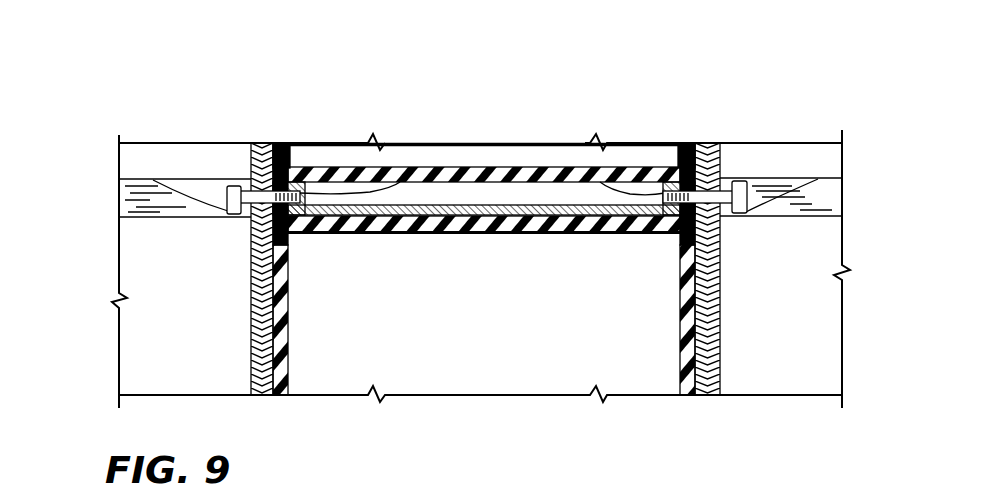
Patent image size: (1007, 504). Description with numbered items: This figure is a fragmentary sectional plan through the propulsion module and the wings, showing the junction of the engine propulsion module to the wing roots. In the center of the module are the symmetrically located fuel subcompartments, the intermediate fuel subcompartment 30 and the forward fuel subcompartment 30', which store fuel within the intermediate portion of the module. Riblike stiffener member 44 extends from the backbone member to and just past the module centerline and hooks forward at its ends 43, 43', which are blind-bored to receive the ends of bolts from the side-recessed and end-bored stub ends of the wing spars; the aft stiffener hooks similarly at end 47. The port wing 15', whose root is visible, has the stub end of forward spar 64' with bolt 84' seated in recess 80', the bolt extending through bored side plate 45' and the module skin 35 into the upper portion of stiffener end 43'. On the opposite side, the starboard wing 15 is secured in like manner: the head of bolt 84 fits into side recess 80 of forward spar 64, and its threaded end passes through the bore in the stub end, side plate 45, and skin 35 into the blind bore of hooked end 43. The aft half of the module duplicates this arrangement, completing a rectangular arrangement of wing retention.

The starboard wing 15 is at (788, 283).
The port wing 15' is at (454, 271).
The intermediate fuel subcompartment 30 is at (484, 296).
The forward fuel subcompartment 30' is at (484, 121).
The module skin 35 is at (267, 150).
The hooked end of forward stiffener 43 is at (601, 154).
The hooked end of forward stiffener 43' is at (484, 145).
The forward stiffener member 44 is at (489, 205).
The side plate 45 is at (715, 344).
The side plate 45' is at (235, 347).
The hooked end of aft stiffener 47 is at (510, 233).
The forward spar 64 is at (725, 143).
The forward spar 64' is at (218, 172).
The side recess 80 is at (782, 146).
The side recess 80' is at (183, 145).
The bolt 84 is at (708, 139).
The bolt 84' is at (258, 138).